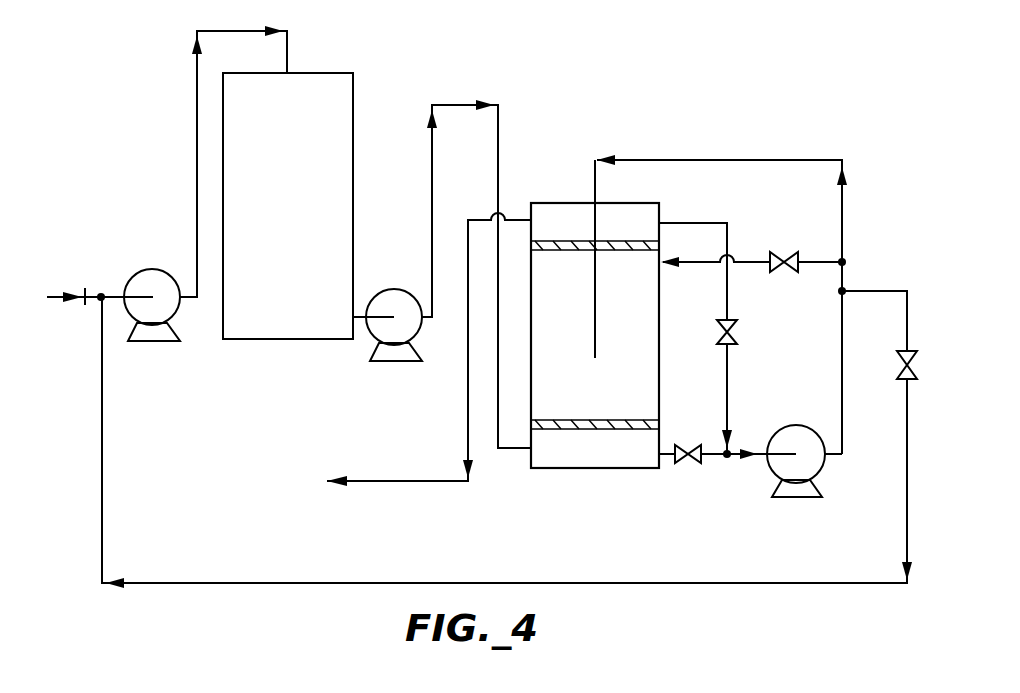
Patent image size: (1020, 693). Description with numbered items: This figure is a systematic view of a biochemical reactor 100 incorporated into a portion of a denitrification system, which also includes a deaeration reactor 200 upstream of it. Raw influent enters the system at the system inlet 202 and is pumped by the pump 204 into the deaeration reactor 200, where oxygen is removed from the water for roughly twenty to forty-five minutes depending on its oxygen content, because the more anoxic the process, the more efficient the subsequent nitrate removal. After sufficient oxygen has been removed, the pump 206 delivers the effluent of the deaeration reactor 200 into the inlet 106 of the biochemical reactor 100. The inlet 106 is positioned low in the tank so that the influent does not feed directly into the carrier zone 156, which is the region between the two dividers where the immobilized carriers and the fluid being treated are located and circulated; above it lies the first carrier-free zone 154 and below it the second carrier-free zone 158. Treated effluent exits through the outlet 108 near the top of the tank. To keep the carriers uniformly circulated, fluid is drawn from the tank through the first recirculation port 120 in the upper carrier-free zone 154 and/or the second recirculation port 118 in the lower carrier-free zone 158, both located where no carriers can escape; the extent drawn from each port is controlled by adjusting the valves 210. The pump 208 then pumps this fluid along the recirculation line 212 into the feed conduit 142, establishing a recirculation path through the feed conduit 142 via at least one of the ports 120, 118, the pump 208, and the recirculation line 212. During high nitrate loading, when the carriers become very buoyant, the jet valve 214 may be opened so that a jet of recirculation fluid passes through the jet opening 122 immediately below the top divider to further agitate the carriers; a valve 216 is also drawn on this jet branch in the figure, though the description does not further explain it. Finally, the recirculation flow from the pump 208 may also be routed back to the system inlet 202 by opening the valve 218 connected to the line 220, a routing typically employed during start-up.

The biochemical reactor 100 is at (618, 126).
The inlet 106 is at (527, 452).
The outlet 108 is at (526, 217).
The second recirculation port 118 is at (680, 462).
The first recirculation port 120 is at (662, 258).
The jet opening 122 is at (666, 256).
The feed conduit 142 is at (596, 323).
The first carrier-free zone 154 is at (580, 232).
The carrier zone 156 is at (580, 334).
The second carrier-free zone 158 is at (617, 461).
The deaeration reactor 200 is at (318, 72).
The system inlet 202 is at (55, 293).
The pump 204 is at (155, 270).
The pump 206 is at (418, 295).
The pump 208 is at (815, 428).
The valves 210 is at (692, 445).
The recirculation line 212 is at (776, 160).
The jet valve 214 is at (780, 275).
The valve 216 is at (822, 258).
The valve 218 is at (896, 366).
The line 220 is at (790, 582).